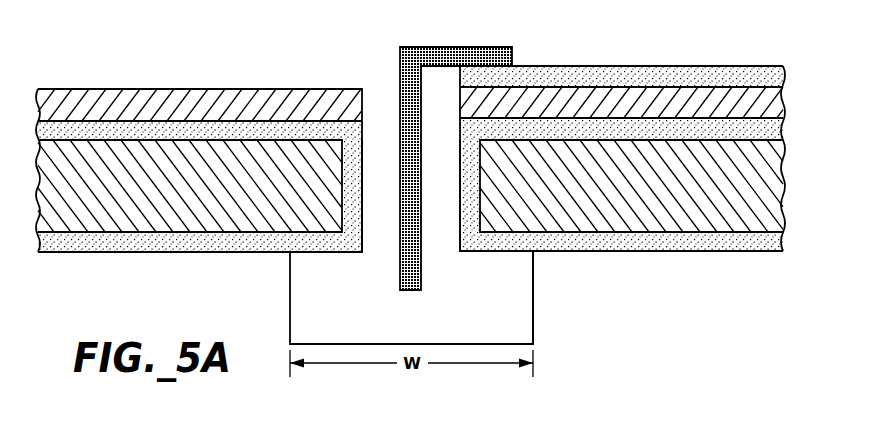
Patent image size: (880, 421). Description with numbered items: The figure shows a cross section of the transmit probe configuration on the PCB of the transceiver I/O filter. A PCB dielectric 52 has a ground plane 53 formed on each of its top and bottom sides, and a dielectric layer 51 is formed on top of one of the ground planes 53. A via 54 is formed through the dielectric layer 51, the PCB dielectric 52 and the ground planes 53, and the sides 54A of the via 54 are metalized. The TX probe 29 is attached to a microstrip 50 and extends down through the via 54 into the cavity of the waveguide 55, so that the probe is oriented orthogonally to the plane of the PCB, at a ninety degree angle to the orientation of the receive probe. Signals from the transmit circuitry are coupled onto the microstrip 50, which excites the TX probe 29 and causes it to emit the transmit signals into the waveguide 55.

The TX probe 29 is at (399, 72).
The microstrip 50 is at (783, 77).
The dielectric layer 51 is at (784, 102).
The PCB dielectric 52 is at (784, 197).
The ground plane 53 is at (784, 128).
The via 54 is at (377, 293).
The sides of the via 54A is at (365, 212).
The waveguide 55 is at (534, 276).